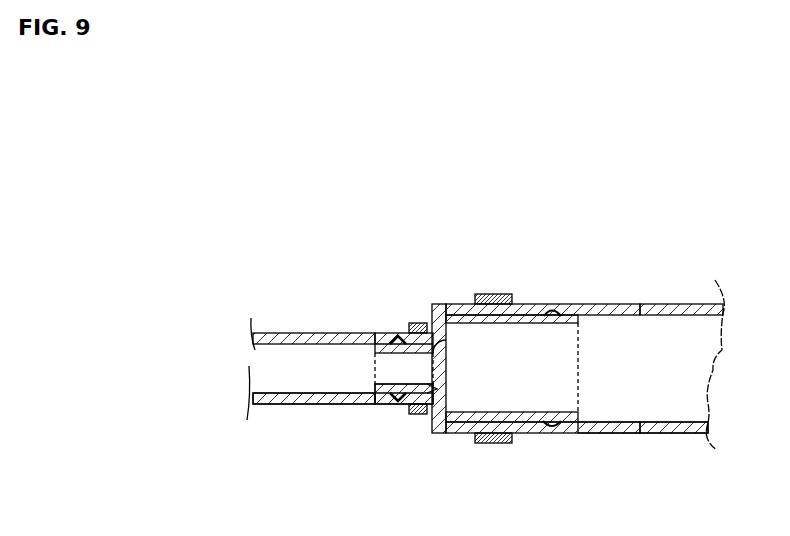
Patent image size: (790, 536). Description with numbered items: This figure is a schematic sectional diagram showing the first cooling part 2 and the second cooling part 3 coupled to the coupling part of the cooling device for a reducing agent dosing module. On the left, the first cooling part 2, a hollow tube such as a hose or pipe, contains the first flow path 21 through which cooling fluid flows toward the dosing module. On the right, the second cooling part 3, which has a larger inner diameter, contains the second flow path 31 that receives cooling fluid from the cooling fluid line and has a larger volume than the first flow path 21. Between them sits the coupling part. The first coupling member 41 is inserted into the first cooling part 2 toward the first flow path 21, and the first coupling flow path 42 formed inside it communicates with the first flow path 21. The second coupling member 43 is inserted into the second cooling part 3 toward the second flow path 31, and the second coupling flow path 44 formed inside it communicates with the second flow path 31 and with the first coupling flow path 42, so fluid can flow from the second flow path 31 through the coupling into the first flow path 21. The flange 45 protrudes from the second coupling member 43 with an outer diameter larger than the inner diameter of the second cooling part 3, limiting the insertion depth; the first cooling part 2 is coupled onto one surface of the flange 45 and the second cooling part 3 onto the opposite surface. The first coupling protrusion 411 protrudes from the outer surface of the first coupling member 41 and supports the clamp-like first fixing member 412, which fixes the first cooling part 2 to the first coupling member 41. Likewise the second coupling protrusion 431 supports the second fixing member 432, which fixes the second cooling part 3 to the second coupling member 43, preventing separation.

The first cooling part 2 is at (317, 333).
The first flow path 21 is at (315, 371).
The first coupling member 41 is at (387, 333).
The first coupling protrusion 411 is at (397, 342).
The first fixing member 412 is at (416, 323).
The first coupling flow path 42 is at (406, 371).
The flange 45 is at (437, 305).
The second coupling member 43 is at (527, 322).
The second coupling protrusion 431 is at (552, 313).
The second fixing member 432 is at (492, 294).
The second coupling flow path 44 is at (546, 379).
The second cooling part 3 is at (625, 310).
The second flow path 31 is at (650, 381).